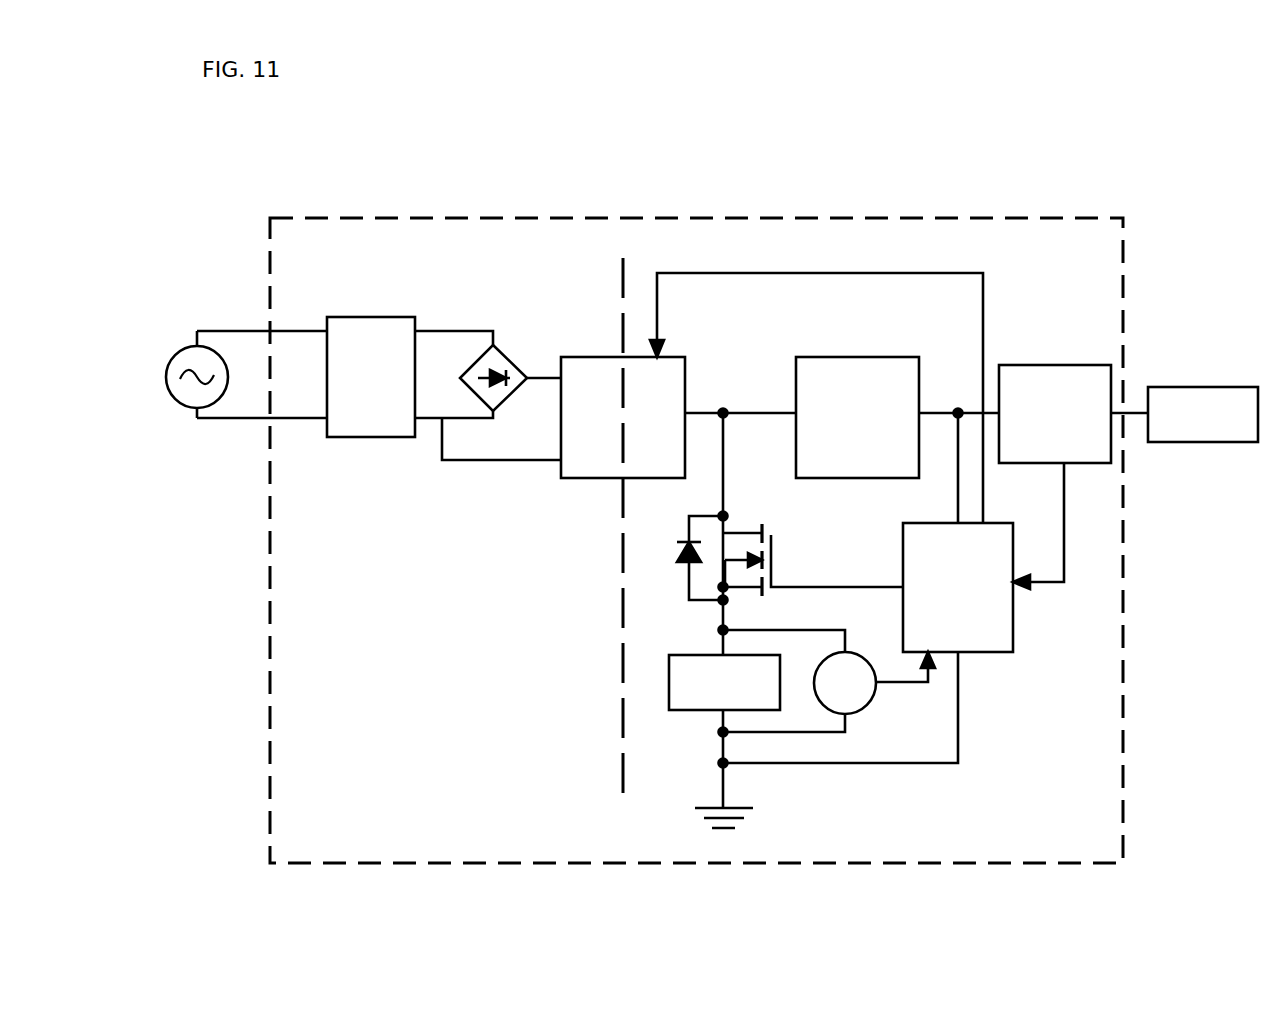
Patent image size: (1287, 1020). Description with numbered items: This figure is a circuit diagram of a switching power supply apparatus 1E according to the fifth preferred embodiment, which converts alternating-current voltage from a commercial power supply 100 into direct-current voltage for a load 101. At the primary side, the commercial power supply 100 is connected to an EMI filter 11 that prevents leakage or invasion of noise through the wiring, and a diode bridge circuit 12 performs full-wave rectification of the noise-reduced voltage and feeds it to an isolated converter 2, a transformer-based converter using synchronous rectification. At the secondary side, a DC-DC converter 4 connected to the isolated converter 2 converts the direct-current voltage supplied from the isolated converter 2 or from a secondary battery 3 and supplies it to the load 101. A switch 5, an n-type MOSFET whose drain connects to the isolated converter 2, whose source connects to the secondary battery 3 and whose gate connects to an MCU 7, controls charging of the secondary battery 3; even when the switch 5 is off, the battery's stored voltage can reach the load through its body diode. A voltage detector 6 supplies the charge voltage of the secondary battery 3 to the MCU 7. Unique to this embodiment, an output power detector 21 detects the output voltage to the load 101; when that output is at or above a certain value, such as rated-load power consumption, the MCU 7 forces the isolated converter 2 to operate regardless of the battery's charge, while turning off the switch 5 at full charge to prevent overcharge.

The switching power supply apparatus 1E is at (290, 216).
The commercial power supply 100 is at (176, 348).
The EMI filter 11 is at (347, 317).
The diode bridge circuit 12 is at (508, 347).
The isolated converter 2 is at (560, 480).
The DC-DC converter 4 is at (920, 357).
The output power detector 21 is at (1053, 365).
The load 101 is at (1250, 387).
The switch 5 is at (796, 541).
The secondary battery 3 is at (680, 711).
The voltage detector 6 is at (870, 706).
The MCU 7 is at (1008, 652).